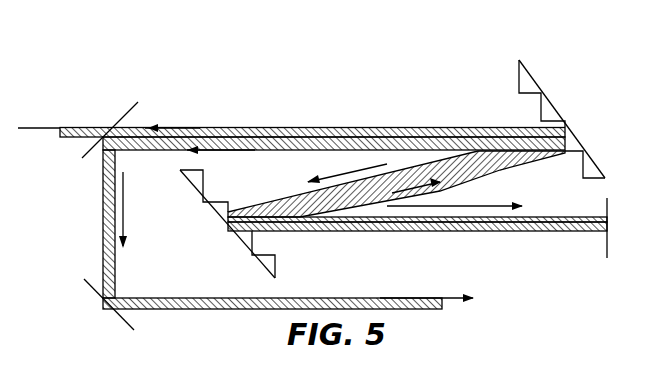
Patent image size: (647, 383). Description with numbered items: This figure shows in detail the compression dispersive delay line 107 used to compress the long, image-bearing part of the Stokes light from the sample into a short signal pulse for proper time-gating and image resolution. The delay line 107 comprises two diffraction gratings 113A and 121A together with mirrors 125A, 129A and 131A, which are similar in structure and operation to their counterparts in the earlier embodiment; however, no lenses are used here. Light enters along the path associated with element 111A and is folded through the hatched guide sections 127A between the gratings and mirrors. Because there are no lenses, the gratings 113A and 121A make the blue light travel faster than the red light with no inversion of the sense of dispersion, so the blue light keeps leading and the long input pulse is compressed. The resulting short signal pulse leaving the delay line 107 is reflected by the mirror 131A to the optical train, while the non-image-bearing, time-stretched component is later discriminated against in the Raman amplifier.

The compression dispersive delay line 107 is at (272, 78).
The light transmitting layer 111A is at (301, 104).
The diffraction grating 113A is at (562, 69).
The diffraction grating 121A is at (232, 240).
The mirror 125A is at (621, 270).
The light guide layer 127A is at (437, 232).
The mirror 129A is at (116, 123).
The mirror 131A is at (95, 300).